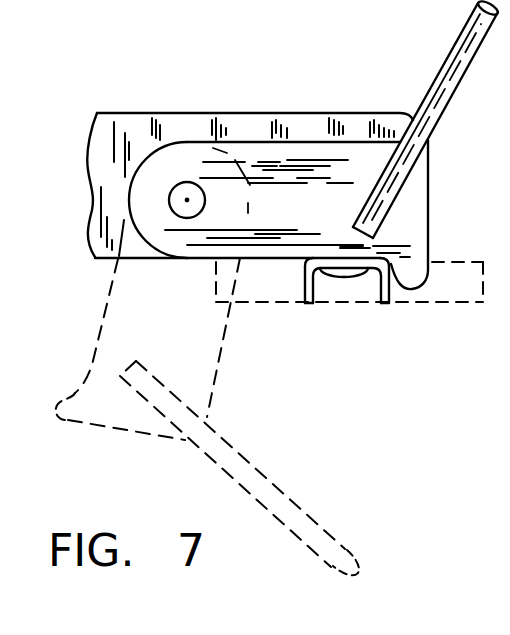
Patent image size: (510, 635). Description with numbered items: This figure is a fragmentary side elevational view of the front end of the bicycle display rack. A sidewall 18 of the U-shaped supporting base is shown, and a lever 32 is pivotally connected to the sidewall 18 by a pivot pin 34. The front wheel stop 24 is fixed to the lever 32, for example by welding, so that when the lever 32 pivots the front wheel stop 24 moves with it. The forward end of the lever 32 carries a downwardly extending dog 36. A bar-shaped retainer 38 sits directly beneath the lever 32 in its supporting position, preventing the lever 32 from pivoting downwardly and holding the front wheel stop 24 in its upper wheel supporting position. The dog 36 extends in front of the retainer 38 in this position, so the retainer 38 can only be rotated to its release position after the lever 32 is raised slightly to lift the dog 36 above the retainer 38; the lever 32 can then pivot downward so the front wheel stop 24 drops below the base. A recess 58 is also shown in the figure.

The sidewall 18 is at (107, 159).
The front wheel stop 24 is at (455, 43).
The lever 32 is at (288, 153).
The pivot pin 34 is at (187, 188).
The dog 36 is at (418, 265).
The retainer 38 is at (390, 285).
The notch / recess 58 is at (343, 273).